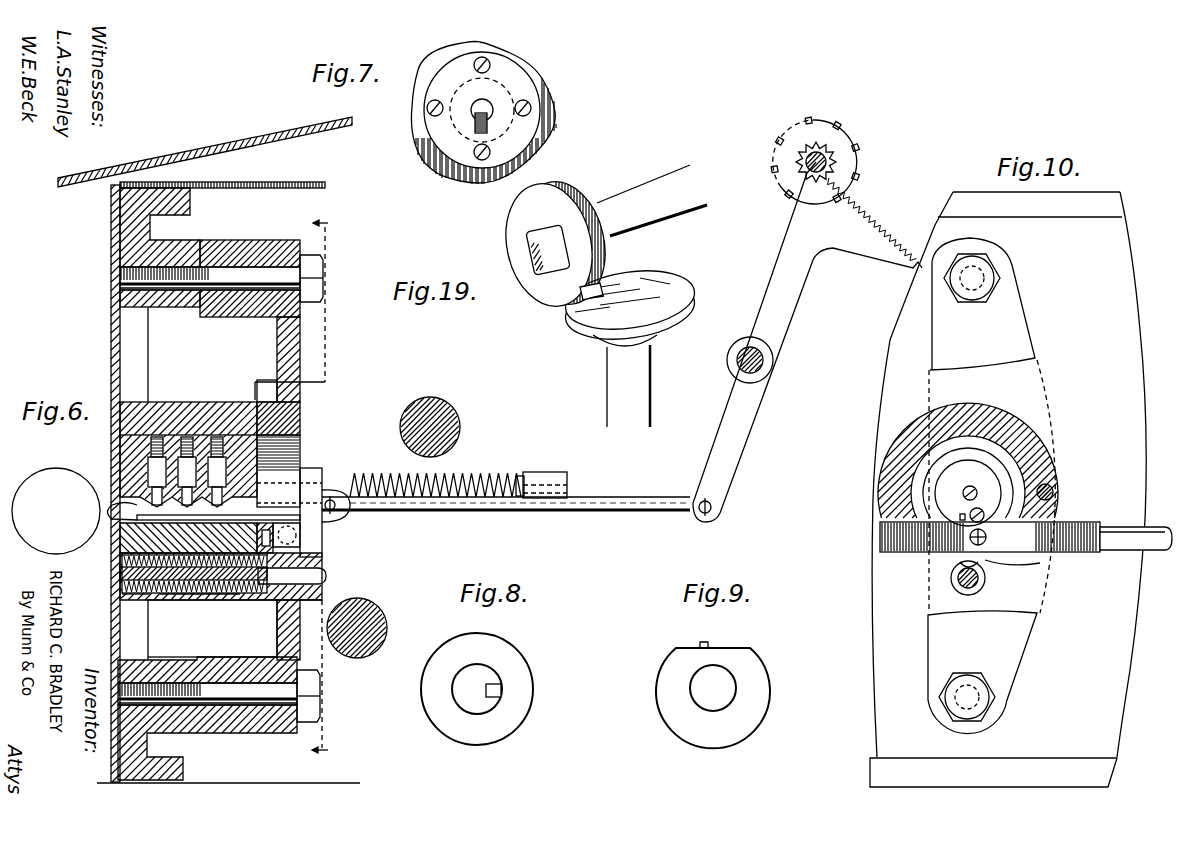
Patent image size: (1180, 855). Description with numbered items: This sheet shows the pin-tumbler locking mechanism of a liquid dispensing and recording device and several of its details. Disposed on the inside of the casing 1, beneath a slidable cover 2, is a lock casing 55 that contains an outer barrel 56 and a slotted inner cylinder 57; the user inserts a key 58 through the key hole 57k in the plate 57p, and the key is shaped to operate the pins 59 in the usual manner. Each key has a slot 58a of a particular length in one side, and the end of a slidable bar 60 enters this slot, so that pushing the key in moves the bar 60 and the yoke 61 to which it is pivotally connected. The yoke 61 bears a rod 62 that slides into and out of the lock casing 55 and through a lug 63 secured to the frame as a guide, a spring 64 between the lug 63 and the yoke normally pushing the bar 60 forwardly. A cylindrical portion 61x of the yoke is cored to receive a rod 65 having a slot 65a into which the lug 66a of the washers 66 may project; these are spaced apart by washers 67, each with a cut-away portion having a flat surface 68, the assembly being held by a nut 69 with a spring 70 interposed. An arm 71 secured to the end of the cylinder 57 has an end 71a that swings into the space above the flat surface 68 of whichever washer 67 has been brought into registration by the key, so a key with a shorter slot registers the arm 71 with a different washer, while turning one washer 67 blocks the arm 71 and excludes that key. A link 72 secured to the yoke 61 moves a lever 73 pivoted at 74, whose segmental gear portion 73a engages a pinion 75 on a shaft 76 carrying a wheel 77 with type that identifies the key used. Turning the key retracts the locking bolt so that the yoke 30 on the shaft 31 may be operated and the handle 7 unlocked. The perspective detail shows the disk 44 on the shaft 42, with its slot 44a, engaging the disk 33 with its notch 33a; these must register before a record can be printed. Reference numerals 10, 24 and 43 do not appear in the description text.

In FIG. 6, the casing 1 is at (111, 338).
In FIG. 10, the casing 1 is at (1107, 280).
In FIG. 6, the cover 2 is at (228, 128).
In FIG. 6, the handle 7 is at (110, 433).
In FIG. 6, the dimension reference 10 is at (300, 487).
In FIG. 19, the stem 24 is at (643, 388).
In FIG. 10, the yoke 30 is at (1140, 528).
In FIG. 6, the shaft 31 is at (388, 663).
In FIG. 19, the disk 33 is at (680, 302).
In FIG. 19, the notch 33a is at (597, 297).
In FIG. 19, the shaft 42 is at (543, 247).
In FIG. 6, the shaft 43 is at (457, 423).
In FIG. 19, the disk 44 is at (523, 238).
In FIG. 19, the slot 44a is at (588, 292).
In FIG. 6, the lock casing 55 is at (295, 352).
In FIG. 10, the lock casing 55 is at (1003, 400).
In FIG. 6, the outer barrel 56 is at (118, 450).
In FIG. 6, the inner cylinder 57 is at (112, 510).
In FIG. 7, the key hole 57k is at (473, 110).
In FIG. 7, the plate 57p is at (527, 135).
In FIG. 6, the key 58 is at (30, 550).
In FIG. 6, the slot 58a is at (137, 520).
In FIG. 6, the pins 59 is at (287, 467).
In FIG. 6, the slidable bar 60 is at (332, 519).
In FIG. 6, the yoke 61 is at (317, 532).
In FIG. 6, the cylindrical portion 61x is at (287, 595).
In FIG. 6, the rod 62 is at (519, 484).
In FIG. 10, the rod 62 is at (1057, 490).
In FIG. 6, the lug 63 is at (553, 478).
In FIG. 6, the spring 64 is at (500, 494).
In FIG. 6, the rod 65 is at (326, 576).
In FIG. 10, the rod 65 is at (960, 582).
In FIG. 10, the slot 65a is at (985, 580).
In FIG. 8, the washers 66 is at (512, 707).
In FIG. 8, the lug 66a is at (493, 697).
In FIG. 9, the washers 67 is at (753, 700).
In FIG. 10, the washers 67 is at (987, 590).
In FIG. 6, the flat surface 68 is at (200, 594).
In FIG. 9, the flat surface 68 is at (700, 643).
In FIG. 10, the flat surface 68 is at (968, 558).
In FIG. 6, the nut 69 is at (143, 598).
In FIG. 6, the spring 70 is at (152, 594).
In FIG. 6, the arm 71 is at (292, 480).
In FIG. 10, the arm 71 is at (997, 470).
In FIG. 10, the arm end 71a is at (1040, 563).
In FIG. 6, the link 72 is at (660, 505).
In FIG. 6, the lever 73 is at (780, 310).
In FIG. 6, the segmental gear portion 73a is at (873, 230).
In FIG. 6, the pivot 74 is at (760, 372).
In FIG. 6, the pinion 75 is at (823, 147).
In FIG. 6, the shaft 76 is at (782, 133).
In FIG. 6, the wheel 77 is at (793, 173).